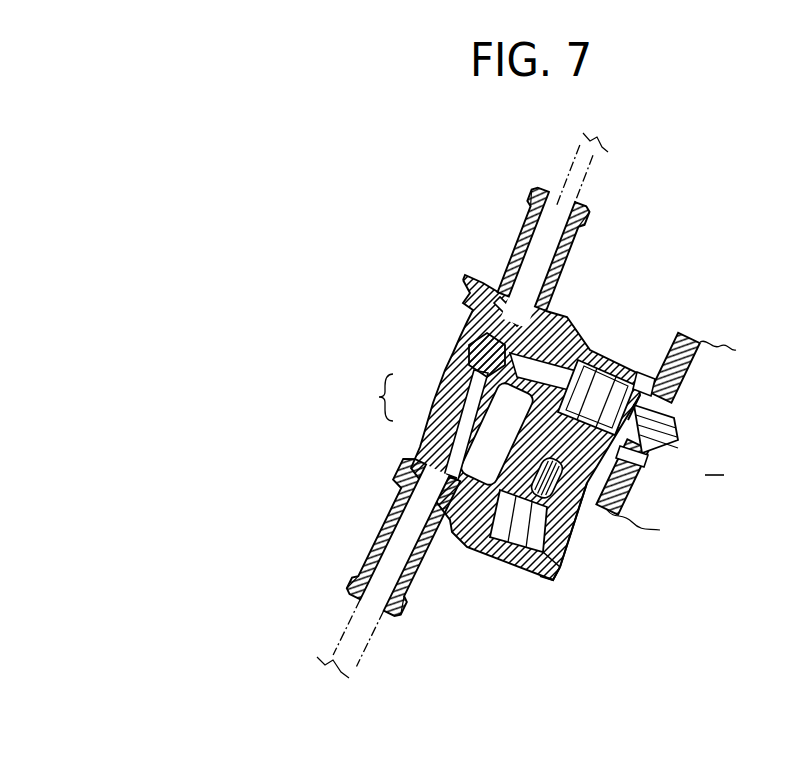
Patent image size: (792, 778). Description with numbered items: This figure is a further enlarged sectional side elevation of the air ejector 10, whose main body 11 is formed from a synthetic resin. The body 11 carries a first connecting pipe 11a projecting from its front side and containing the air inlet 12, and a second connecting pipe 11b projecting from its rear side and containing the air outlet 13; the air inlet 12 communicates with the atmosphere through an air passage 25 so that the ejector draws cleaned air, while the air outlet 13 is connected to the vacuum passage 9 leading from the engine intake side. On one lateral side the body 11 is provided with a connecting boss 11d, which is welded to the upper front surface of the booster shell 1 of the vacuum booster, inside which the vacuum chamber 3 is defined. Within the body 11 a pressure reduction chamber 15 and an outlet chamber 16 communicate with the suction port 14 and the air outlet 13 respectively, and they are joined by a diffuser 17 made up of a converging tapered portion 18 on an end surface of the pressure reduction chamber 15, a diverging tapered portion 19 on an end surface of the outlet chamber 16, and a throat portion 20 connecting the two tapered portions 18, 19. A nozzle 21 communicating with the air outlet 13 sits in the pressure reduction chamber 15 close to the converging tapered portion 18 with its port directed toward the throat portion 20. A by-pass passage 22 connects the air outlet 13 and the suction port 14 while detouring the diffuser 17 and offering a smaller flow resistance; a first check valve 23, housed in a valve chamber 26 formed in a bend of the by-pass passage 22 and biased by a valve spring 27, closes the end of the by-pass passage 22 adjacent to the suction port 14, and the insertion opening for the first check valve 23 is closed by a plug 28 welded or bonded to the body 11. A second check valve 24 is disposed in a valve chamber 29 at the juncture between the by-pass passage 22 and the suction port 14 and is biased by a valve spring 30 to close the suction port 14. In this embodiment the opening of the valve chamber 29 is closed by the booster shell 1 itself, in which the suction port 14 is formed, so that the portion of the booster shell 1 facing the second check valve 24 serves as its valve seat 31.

The booster shell 1 is at (690, 343).
The vacuum chamber 3 is at (714, 461).
The vacuum passage 9 is at (357, 652).
The air ejector 10 is at (455, 286).
The body 11 is at (567, 527).
The first connecting pipe 11a is at (540, 232).
The second connecting pipe 11b is at (375, 540).
The connecting boss 11d is at (674, 386).
The air inlet 12 is at (575, 207).
The air outlet 13 is at (370, 583).
The suction port 14 is at (674, 432).
The pressure reduction chamber 15 is at (480, 352).
The outlet chamber 16 is at (418, 483).
The diffuser 17 is at (371, 397).
The converging tapered portion 18 is at (462, 368).
The diverging tapered portion 19 is at (437, 462).
The throat portion 20 is at (462, 407).
The nozzle 21 is at (499, 380).
The by-pass passage 22 is at (545, 440).
The first check valve 23 is at (522, 518).
The second check valve 24 is at (641, 380).
The air passage 25 is at (578, 146).
The valve chamber 26 is at (508, 532).
The valve spring 27 is at (533, 548).
The plug 28 is at (547, 580).
The valve chamber 29 is at (628, 378).
The valve spring 30 is at (598, 385).
The valve seat 31 is at (634, 456).